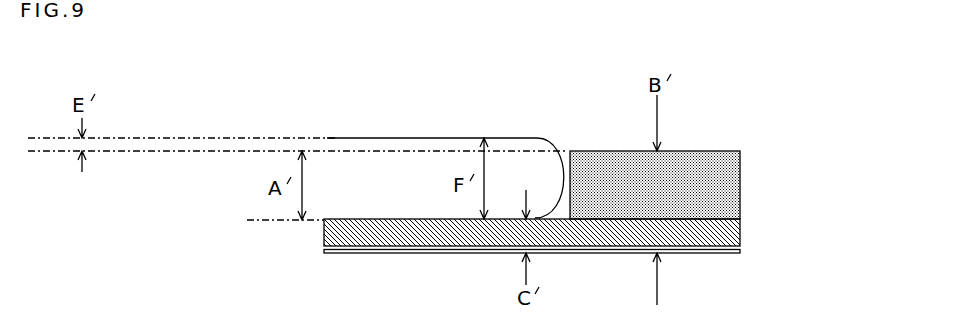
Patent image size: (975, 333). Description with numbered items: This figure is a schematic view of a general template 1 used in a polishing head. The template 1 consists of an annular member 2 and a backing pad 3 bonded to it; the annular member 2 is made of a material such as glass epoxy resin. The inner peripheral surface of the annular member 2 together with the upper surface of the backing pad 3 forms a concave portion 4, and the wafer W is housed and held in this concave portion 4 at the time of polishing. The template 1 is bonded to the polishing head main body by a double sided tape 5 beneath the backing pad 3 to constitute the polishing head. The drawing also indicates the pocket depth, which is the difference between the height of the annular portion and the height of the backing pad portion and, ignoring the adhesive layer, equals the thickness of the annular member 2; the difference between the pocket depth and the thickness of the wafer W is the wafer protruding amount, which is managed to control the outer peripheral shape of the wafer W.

The template 1 is at (746, 120).
The annular member 2 is at (720, 175).
The backing pad 3 is at (722, 235).
The concave portion 4 is at (568, 132).
The double sided tape 5 is at (722, 248).
The wafer W is at (412, 198).